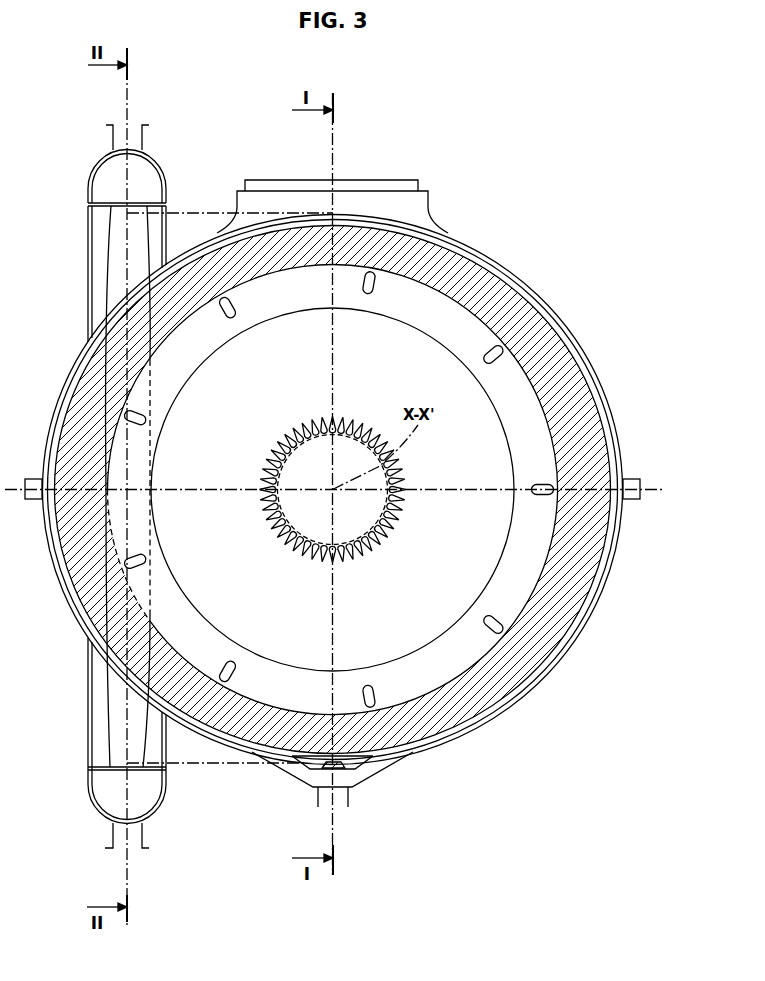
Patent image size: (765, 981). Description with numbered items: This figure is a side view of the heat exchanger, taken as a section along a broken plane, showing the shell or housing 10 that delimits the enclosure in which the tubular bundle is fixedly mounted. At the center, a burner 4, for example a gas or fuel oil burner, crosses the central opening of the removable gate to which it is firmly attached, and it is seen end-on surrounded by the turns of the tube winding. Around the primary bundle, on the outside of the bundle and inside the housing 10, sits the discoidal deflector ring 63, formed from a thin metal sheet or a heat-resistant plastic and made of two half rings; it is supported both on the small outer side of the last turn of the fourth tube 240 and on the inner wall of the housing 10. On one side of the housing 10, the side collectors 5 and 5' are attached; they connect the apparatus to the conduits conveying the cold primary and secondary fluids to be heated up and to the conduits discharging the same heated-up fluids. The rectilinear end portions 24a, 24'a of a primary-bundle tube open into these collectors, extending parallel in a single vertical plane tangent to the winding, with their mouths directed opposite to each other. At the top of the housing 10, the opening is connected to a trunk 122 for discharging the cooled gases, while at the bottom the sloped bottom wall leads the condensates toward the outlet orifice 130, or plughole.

The burner 4 is at (368, 510).
The side collector 5 is at (107, 228).
The side collector 5' is at (104, 750).
The housing 10 is at (575, 333).
The opening end portion of a primary bundle tube 24a is at (120, 250).
The opening end portion of a primary bundle tube 24'a is at (89, 629).
The discoidal deflector ring 63 is at (548, 633).
The trunk 122 is at (415, 187).
The outlet orifice 130 is at (350, 797).
The fourth tube 240 is at (448, 660).